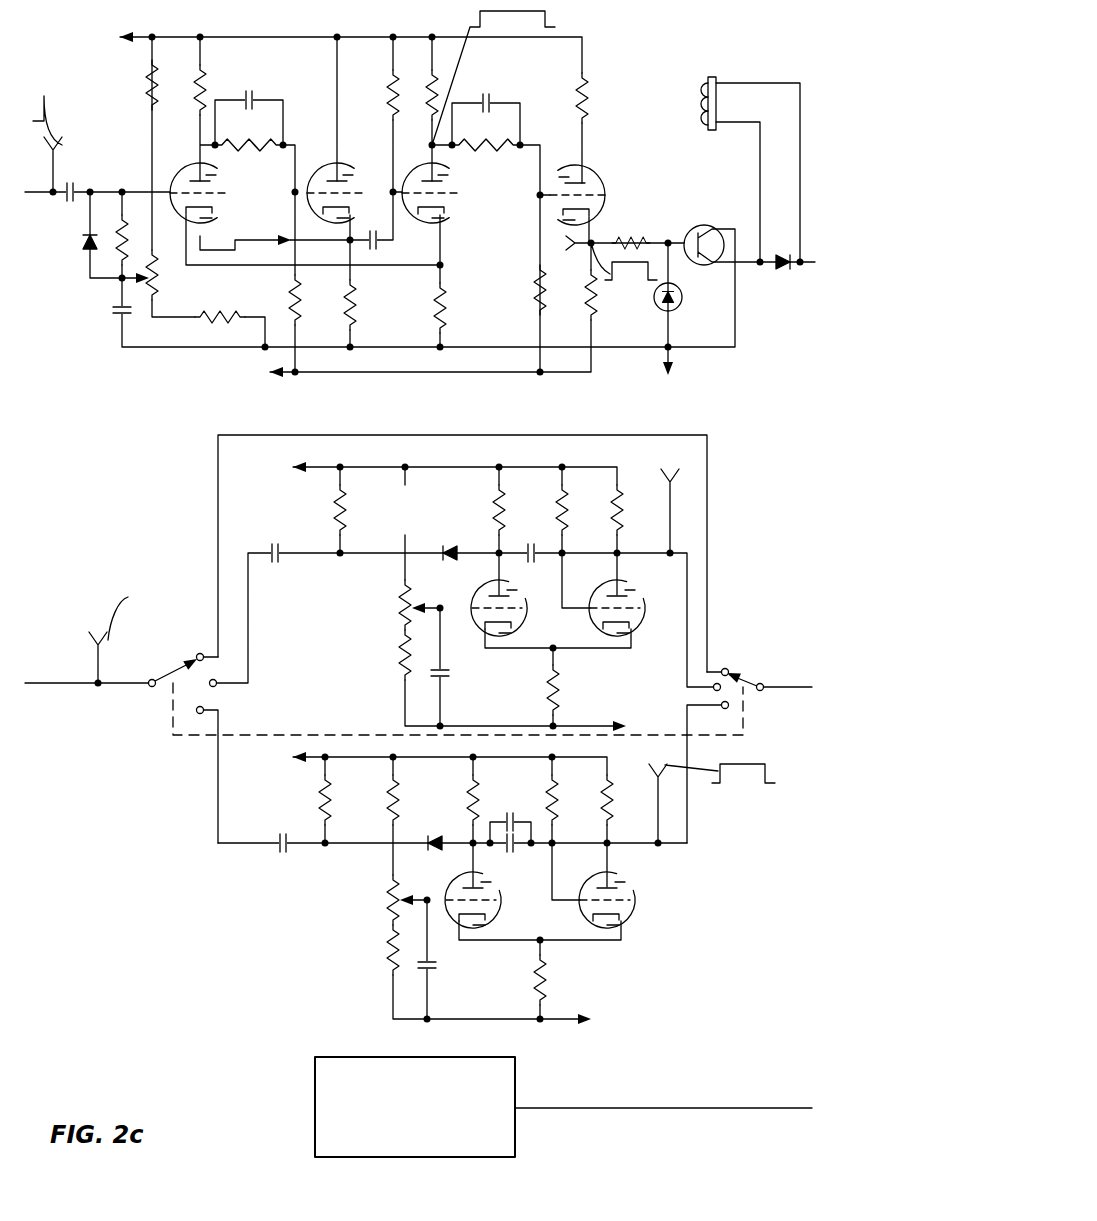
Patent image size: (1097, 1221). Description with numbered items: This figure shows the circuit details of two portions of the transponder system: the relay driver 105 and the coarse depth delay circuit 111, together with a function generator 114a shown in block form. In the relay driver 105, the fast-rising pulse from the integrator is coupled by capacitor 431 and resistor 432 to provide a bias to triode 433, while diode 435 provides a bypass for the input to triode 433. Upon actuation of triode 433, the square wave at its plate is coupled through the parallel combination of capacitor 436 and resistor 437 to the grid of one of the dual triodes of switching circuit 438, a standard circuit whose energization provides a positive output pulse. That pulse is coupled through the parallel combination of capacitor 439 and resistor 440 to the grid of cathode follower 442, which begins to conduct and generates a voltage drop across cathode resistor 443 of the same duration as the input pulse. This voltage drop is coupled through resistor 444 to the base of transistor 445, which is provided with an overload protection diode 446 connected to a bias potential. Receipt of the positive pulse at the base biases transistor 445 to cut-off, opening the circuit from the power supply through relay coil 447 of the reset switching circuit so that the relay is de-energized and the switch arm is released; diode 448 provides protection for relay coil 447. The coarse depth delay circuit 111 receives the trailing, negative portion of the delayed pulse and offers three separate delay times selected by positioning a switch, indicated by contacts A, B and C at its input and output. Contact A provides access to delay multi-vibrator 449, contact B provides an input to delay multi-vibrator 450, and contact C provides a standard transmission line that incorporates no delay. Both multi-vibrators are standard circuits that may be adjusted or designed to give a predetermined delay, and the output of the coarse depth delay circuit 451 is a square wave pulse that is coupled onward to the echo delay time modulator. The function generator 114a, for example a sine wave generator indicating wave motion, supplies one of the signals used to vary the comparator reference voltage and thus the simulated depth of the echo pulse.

The relay driver 105 is at (606, 77).
The coarse depth delay circuit 111 is at (208, 572).
The function generator 114a is at (515, 1068).
The capacitor 431 is at (76, 184).
The resistor 432 is at (128, 208).
The triode 433 is at (206, 172).
The diode 435 is at (84, 246).
The capacitor 436 is at (254, 99).
The resistor 437 is at (258, 131).
The switching circuit 438 is at (370, 165).
The capacitor 439 is at (490, 101).
The resistor 440 is at (484, 148).
The cathode follower 442 is at (605, 175).
The cathode resistor 443 is at (596, 300).
The resistor 444 is at (626, 240).
The transistor 445 is at (696, 231).
The overload protection diode 446 is at (680, 306).
The relay coil 447 is at (704, 100).
The diode 448 is at (783, 271).
The delay multi-vibrator 449 is at (385, 567).
The delay multi-vibrator 450 is at (310, 782).
The coarse depth delay circuit 451 is at (218, 500).